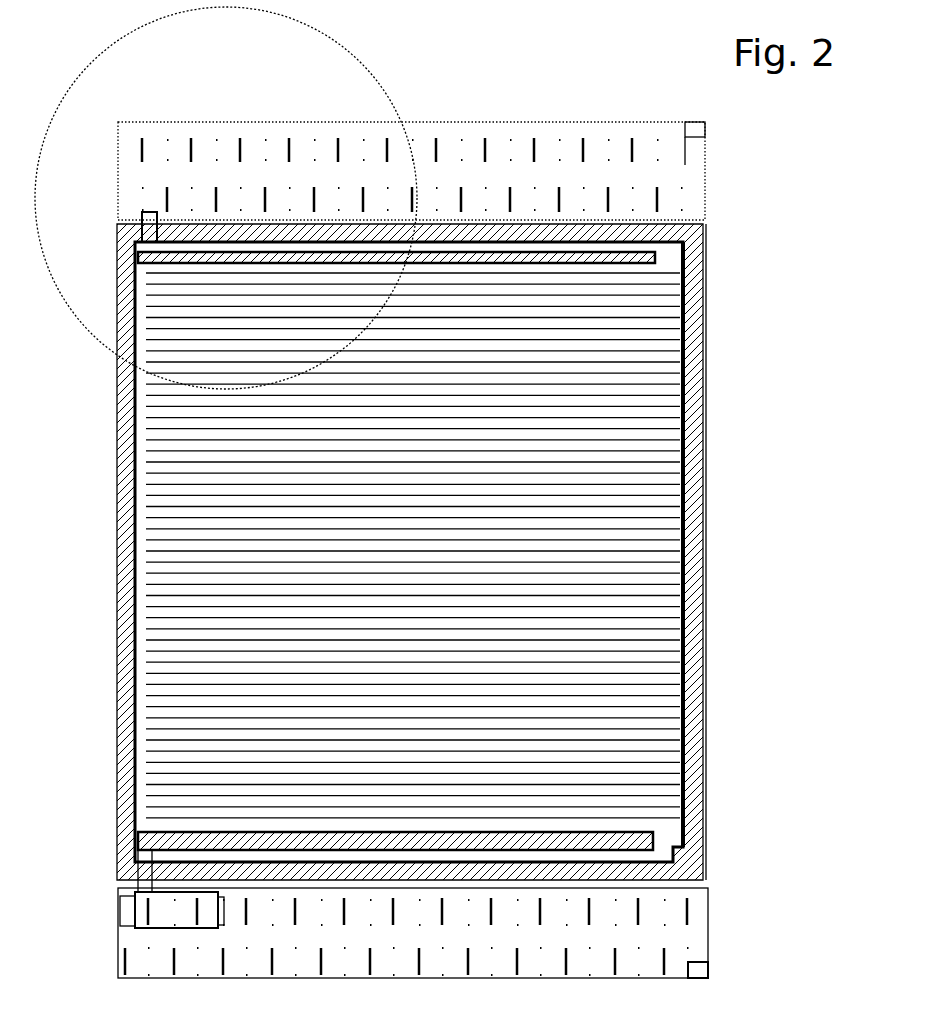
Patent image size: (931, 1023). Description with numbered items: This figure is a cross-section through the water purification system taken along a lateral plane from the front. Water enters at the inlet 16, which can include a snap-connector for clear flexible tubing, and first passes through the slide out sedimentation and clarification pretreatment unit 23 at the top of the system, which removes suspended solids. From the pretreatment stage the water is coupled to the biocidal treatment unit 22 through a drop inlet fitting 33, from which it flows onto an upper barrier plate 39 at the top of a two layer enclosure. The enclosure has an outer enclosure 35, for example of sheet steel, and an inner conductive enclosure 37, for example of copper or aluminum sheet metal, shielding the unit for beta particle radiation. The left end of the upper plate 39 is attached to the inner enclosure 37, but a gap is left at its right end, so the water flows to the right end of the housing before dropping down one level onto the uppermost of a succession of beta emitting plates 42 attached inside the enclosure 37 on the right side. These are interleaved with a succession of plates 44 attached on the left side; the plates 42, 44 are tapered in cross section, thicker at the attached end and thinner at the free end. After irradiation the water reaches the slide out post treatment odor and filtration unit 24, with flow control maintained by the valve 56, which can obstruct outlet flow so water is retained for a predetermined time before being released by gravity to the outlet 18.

The inlet 16 is at (700, 130).
The outlet 18 is at (710, 970).
The biocidal treatment unit 22 is at (113, 405).
The pretreatment unit 23 is at (118, 152).
The post treatment unit 24 is at (118, 955).
The drop inlet fitting 33 is at (142, 212).
The outer enclosure 35 is at (703, 618).
The inner conductive enclosure 37 is at (693, 735).
The upper barrier plate 39 is at (655, 257).
The beta emitting plates 42 is at (660, 326).
The interleaved plates 44 is at (690, 392).
The valve 56 is at (120, 910).